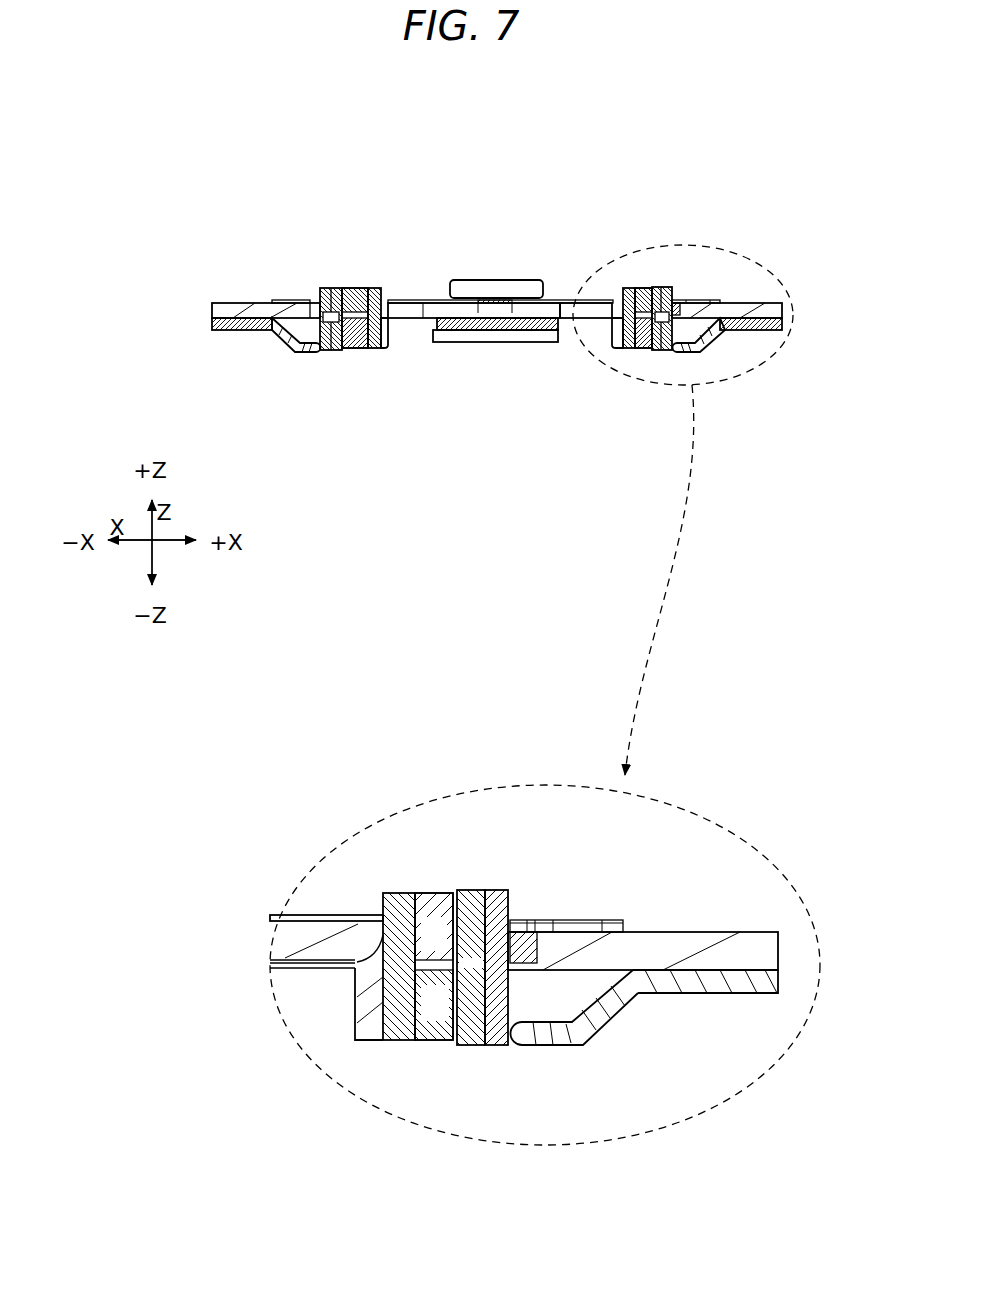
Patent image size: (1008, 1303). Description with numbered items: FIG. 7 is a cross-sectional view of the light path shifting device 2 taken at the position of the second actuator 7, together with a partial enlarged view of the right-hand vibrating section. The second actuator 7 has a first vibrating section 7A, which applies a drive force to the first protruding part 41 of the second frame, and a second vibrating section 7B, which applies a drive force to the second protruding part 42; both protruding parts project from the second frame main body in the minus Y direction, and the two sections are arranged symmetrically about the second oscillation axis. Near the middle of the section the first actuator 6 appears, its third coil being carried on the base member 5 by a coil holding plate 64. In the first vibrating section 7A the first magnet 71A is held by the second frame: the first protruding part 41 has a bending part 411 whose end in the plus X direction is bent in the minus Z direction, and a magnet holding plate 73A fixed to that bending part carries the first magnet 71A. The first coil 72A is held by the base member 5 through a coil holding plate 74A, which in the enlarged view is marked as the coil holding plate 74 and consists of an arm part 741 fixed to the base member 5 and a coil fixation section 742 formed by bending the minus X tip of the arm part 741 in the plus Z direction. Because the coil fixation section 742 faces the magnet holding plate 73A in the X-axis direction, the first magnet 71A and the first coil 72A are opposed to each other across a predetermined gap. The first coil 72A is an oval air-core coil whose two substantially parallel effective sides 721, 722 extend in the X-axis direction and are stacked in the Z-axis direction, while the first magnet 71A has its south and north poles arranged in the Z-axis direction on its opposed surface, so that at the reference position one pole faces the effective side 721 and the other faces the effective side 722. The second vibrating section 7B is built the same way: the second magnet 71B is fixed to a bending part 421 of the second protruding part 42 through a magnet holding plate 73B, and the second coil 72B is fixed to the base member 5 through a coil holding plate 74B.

The actuator device 2 is at (203, 200).
The base member 5 is at (785, 305).
The first actuator 6 is at (496, 272).
The second actuator 7 is at (484, 695).
The first vibrating section 7A is at (484, 698).
The second vibrating section 7B is at (356, 327).
The first protruding part 41 is at (577, 322).
The second protruding part 42 is at (408, 332).
The coil holding plate 64 is at (468, 342).
The elastic member 74 is at (548, 1090).
The coil holding plate 74A is at (695, 318).
The coil holding plate 74B is at (298, 318).
The bending part 411 is at (615, 348).
The bending part 421 is at (385, 348).
The first magnet 71A is at (645, 288).
The second magnet 71B is at (355, 288).
The first coil 72A is at (660, 287).
The second coil 72B is at (330, 288).
The magnet holding plate 73A is at (623, 300).
The magnet holding plate 73B is at (378, 288).
The effective side 721 is at (470, 890).
The effective side 722 is at (500, 895).
The arm part 741 is at (237, 332).
The coil fixation section 742 is at (285, 342).